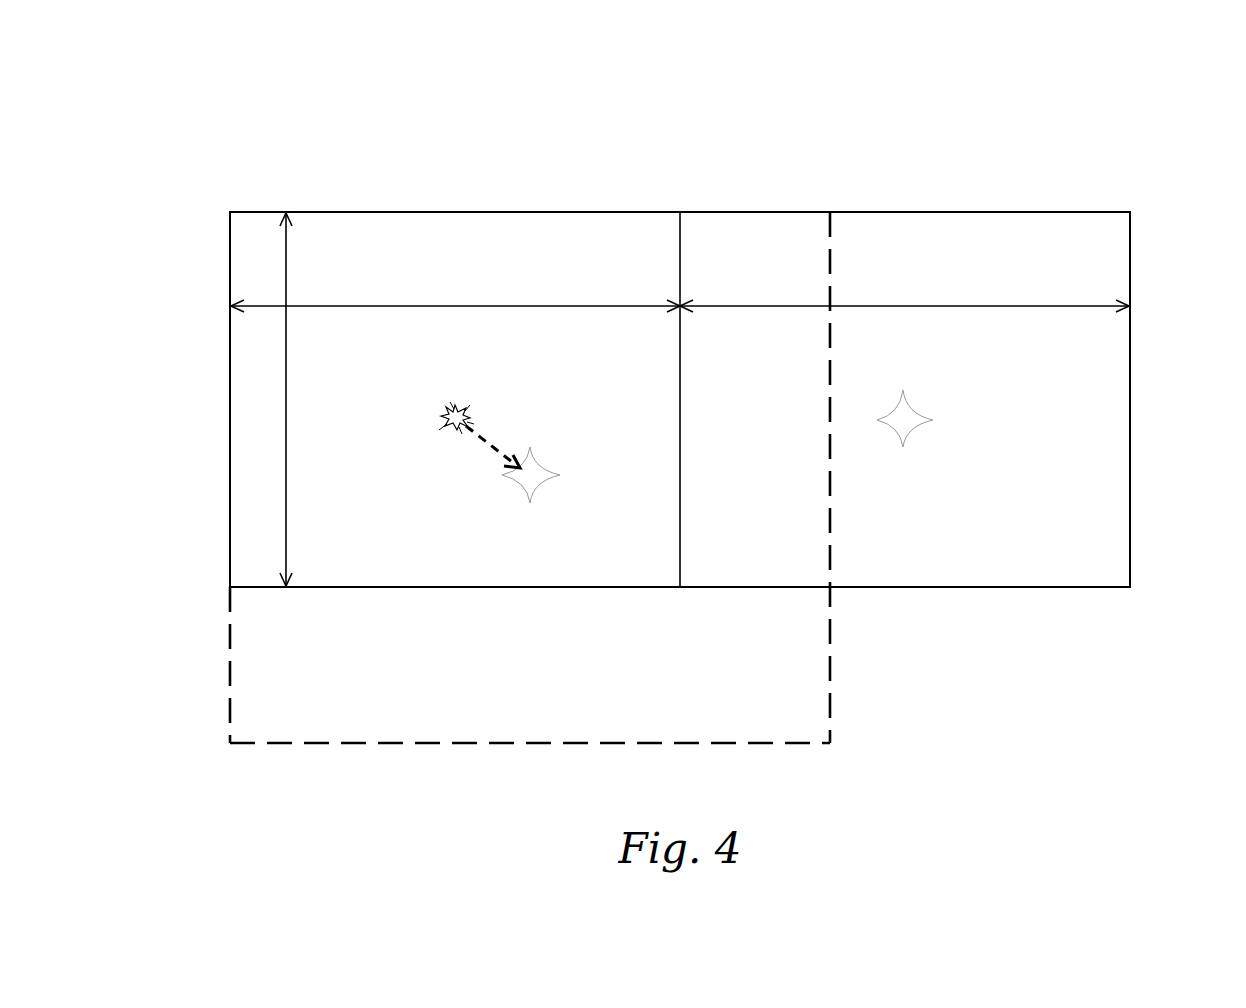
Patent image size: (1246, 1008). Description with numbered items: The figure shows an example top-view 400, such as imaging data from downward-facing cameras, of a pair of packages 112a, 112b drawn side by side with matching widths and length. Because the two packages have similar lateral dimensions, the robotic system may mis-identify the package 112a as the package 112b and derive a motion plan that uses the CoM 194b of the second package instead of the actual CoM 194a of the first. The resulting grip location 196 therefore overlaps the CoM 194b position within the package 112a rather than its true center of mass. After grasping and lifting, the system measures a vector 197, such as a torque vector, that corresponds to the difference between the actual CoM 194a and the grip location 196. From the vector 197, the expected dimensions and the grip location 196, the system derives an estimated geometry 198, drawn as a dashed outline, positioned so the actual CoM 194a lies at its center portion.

The top-view 400 is at (1030, 116).
The package 112a is at (245, 245).
The package 112b is at (1080, 483).
The CoM 194a is at (529, 475).
The CoM 194b is at (903, 418).
The grip location 196 is at (446, 416).
The vector 197 is at (478, 437).
The estimated geometry 198 is at (831, 660).